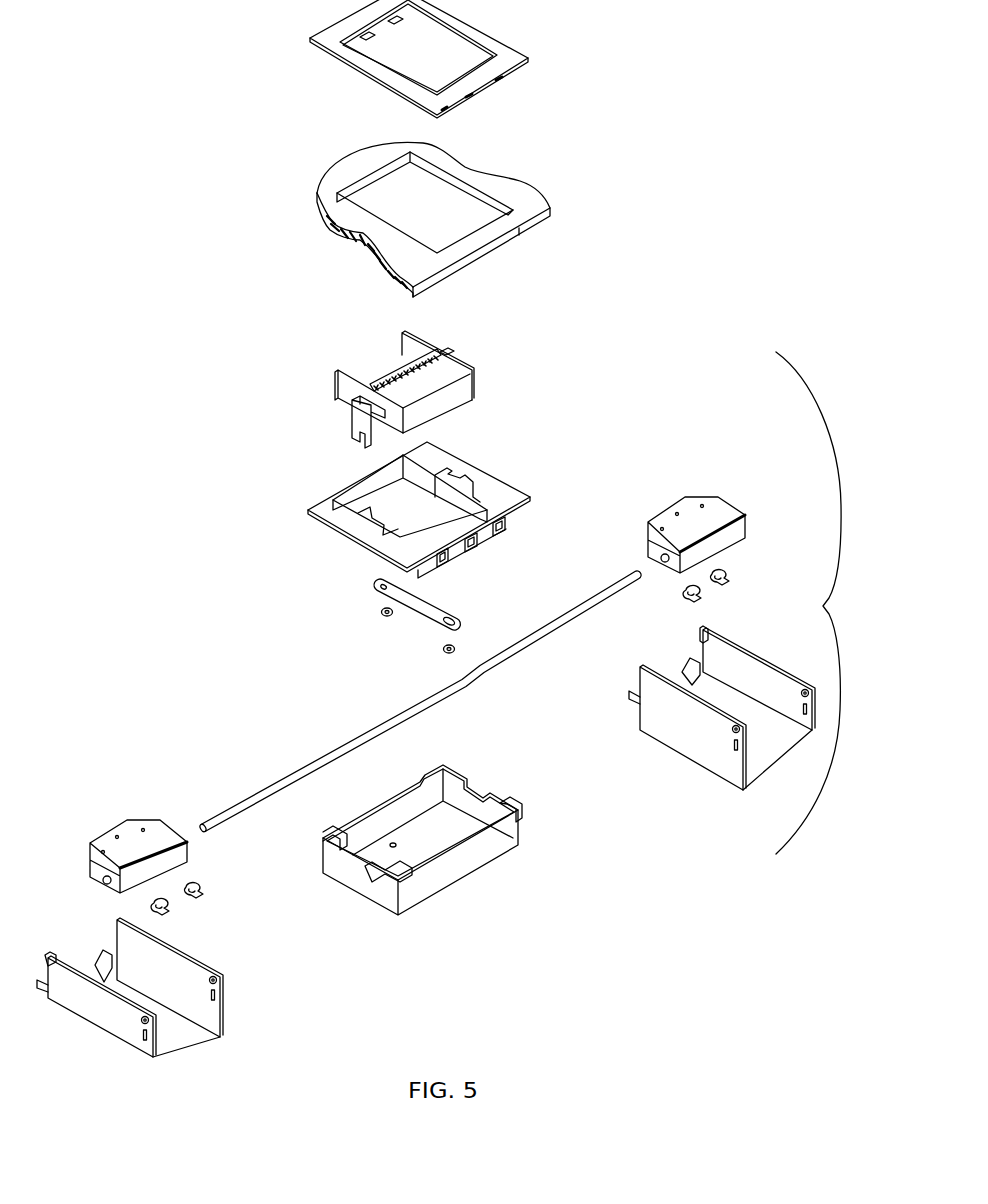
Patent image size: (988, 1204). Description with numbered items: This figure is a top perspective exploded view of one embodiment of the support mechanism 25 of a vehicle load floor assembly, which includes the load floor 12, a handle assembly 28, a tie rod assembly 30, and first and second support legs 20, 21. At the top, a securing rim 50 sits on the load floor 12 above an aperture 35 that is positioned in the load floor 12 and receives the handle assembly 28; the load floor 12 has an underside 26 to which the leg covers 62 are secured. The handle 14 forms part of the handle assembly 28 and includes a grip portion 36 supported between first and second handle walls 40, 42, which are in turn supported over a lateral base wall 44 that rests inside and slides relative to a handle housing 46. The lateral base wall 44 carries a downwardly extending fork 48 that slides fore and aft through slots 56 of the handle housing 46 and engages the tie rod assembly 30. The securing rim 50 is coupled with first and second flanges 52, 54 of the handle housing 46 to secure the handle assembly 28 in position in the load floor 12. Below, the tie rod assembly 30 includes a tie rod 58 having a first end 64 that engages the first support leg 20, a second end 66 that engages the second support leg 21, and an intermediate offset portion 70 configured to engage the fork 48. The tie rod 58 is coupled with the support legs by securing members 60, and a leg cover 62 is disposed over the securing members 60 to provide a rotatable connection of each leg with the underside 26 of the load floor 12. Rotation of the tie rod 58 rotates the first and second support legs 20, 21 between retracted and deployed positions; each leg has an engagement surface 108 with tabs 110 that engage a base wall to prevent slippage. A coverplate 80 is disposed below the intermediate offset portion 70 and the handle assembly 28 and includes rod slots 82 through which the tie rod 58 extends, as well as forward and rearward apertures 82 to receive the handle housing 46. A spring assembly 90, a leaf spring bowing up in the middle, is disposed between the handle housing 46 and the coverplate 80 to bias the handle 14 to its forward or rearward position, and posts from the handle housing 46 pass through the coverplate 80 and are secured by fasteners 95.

The securing rim 50 is at (493, 43).
The load floor 12 is at (454, 210).
The aperture 35 is at (438, 200).
The underside 26 is at (518, 236).
The handle 14 is at (490, 382).
The handle assembly 28 is at (403, 332).
The grip portion 36 is at (388, 374).
The first handle wall 40 is at (345, 387).
The second handle wall 42 is at (463, 362).
The lateral base wall 44 is at (443, 403).
The first downwardly extending fork 48 is at (357, 433).
The first flange 52 is at (330, 517).
The second flange 54 is at (420, 512).
The slots 56 is at (457, 487).
The handle housing 46 is at (488, 548).
The spring assembly 90 is at (428, 608).
The fasteners 95 is at (448, 649).
The tie rod 58 is at (420, 717).
The first end 64 is at (248, 812).
The second end 66 is at (590, 612).
The intermediate offset portion 70 is at (393, 723).
The leg cover 62 is at (717, 510).
The securing members 60 is at (695, 587).
The second support leg 21 is at (423, 830).
The first support leg 20 is at (123, 1028).
The engagement surface 108 is at (645, 666).
The tabs 110 is at (688, 663).
The coverplate 80 is at (414, 845).
The rod slots 82 is at (375, 820).
The support mechanism 25 is at (817, 603).
The tie rod assembly 30 is at (215, 745).